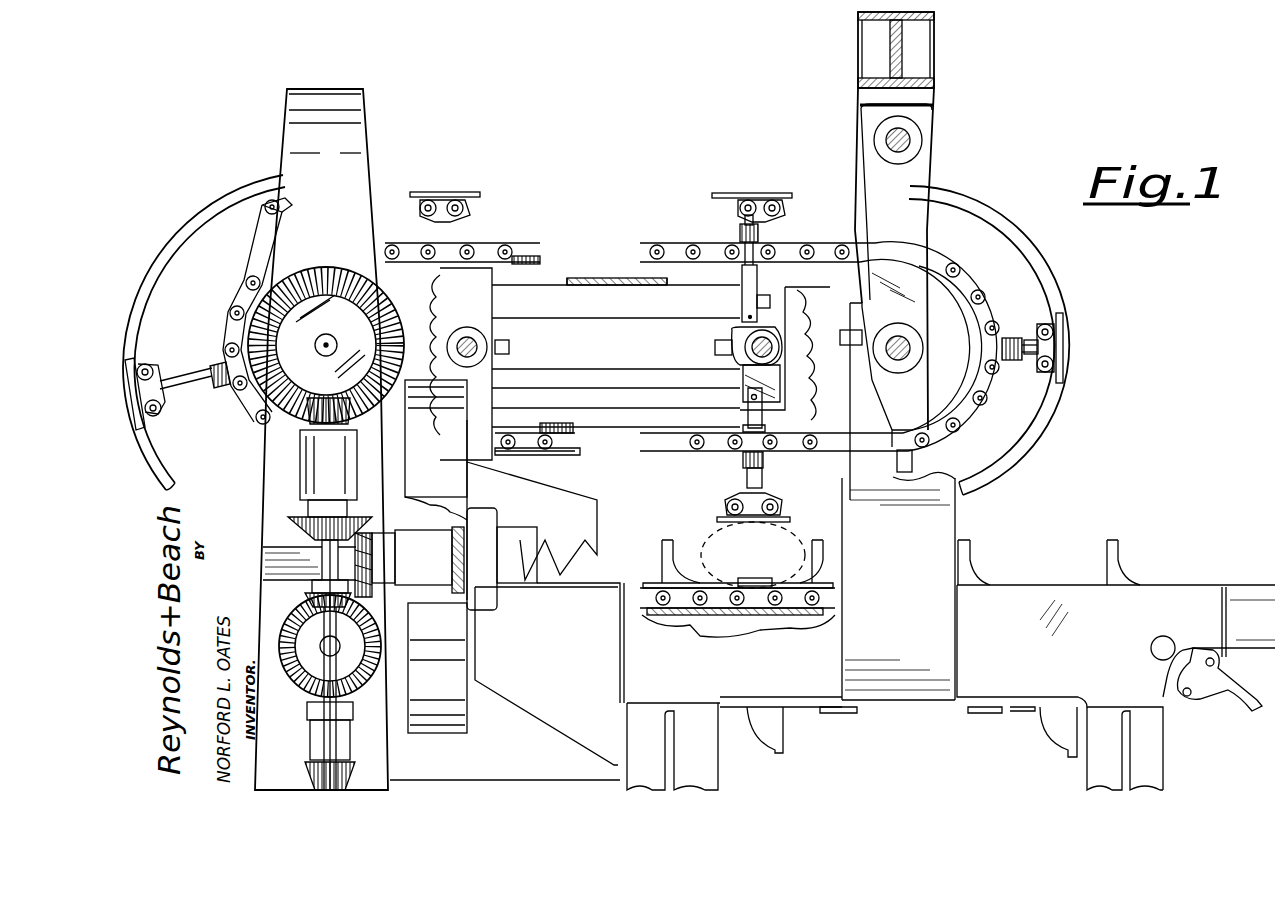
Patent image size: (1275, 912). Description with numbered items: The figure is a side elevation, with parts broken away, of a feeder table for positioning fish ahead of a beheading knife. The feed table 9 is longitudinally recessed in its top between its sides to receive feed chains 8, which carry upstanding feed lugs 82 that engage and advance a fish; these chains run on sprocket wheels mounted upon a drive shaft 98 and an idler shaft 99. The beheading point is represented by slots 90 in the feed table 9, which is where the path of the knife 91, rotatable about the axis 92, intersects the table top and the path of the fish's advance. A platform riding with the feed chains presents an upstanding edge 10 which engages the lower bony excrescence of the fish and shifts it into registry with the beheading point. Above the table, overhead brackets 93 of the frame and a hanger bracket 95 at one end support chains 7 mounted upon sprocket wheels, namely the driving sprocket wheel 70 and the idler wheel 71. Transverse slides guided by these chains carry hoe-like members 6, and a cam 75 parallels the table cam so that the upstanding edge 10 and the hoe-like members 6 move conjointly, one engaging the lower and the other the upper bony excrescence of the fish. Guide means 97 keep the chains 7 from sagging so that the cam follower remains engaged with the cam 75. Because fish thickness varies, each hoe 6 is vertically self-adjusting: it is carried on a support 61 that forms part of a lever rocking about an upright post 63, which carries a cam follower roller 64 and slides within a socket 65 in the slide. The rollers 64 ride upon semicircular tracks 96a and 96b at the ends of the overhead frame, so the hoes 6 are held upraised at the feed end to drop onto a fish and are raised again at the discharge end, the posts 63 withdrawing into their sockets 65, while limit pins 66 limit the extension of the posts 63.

The hoe-like member 6 is at (146, 428).
The chain 7 is at (508, 242).
The feed chain 8 is at (748, 598).
The feed table 9 is at (1027, 585).
The upstanding edge 10 is at (760, 580).
The support 61 is at (758, 200).
The upright post 63 is at (188, 378).
The cam follower roller 64 is at (144, 366).
The socket 65 is at (222, 388).
The limit pin 66 is at (745, 322).
The driving sprocket wheel 70 is at (248, 292).
The idler wheel 71 is at (952, 396).
The cam 75 is at (612, 280).
The feed lug 82 is at (1113, 540).
The slot 90 is at (600, 582).
The knife 91 is at (556, 502).
The axis 92 is at (290, 550).
The overhead bracket 93 is at (352, 130).
The hanger bracket 95 is at (905, 190).
The semicircular track 96a is at (998, 480).
The semicircular track 96b is at (160, 468).
The guide means 97 is at (540, 262).
The drive shaft 98 is at (338, 650).
The idler shaft 99 is at (1168, 636).